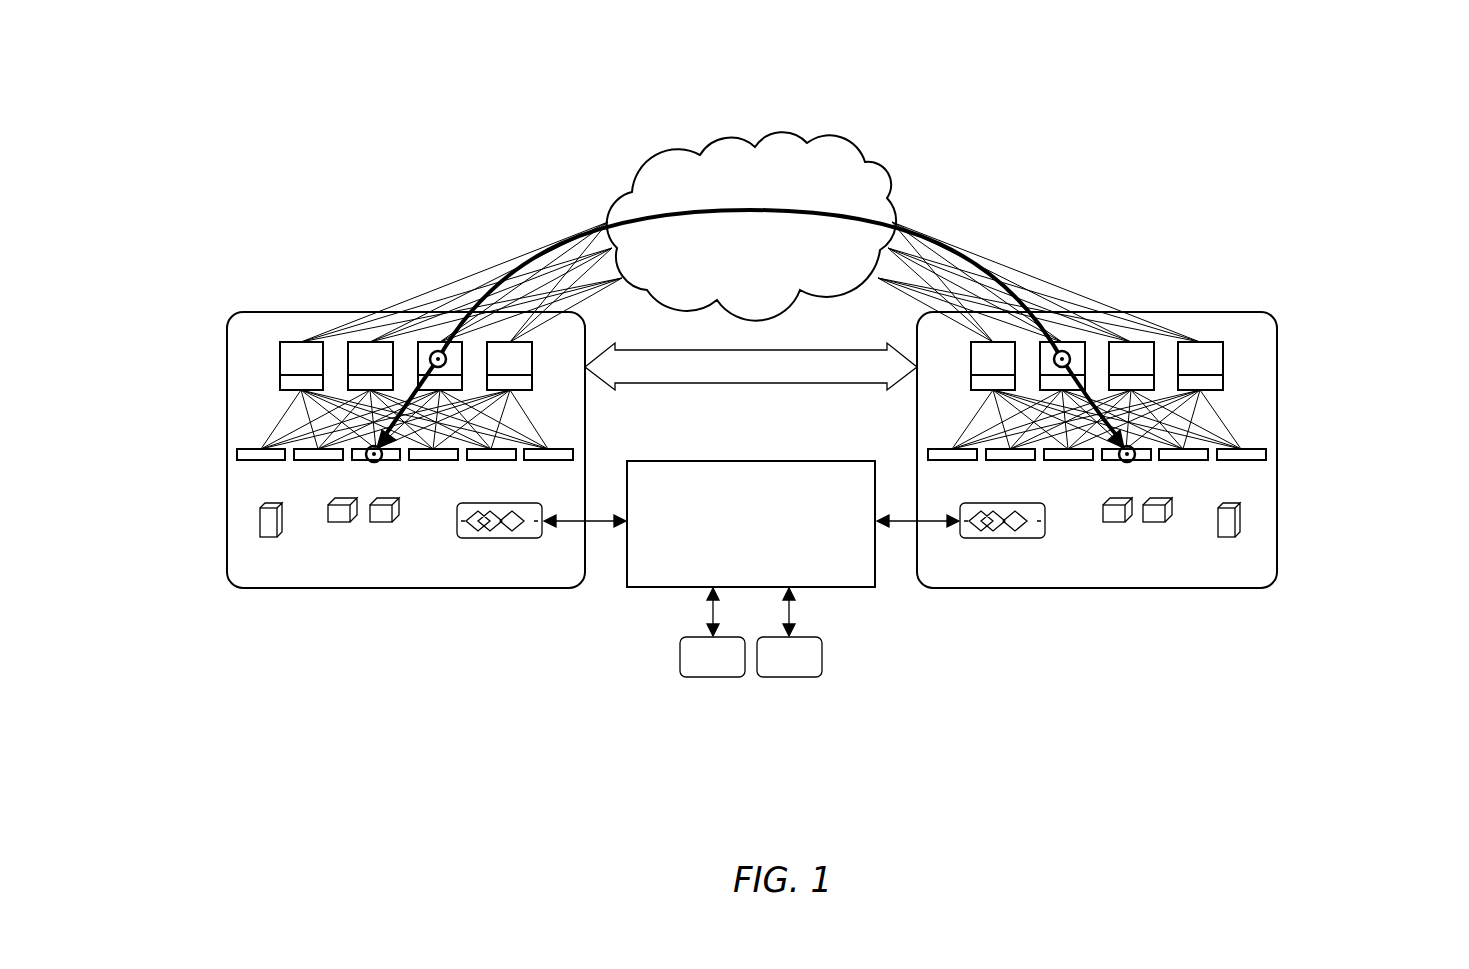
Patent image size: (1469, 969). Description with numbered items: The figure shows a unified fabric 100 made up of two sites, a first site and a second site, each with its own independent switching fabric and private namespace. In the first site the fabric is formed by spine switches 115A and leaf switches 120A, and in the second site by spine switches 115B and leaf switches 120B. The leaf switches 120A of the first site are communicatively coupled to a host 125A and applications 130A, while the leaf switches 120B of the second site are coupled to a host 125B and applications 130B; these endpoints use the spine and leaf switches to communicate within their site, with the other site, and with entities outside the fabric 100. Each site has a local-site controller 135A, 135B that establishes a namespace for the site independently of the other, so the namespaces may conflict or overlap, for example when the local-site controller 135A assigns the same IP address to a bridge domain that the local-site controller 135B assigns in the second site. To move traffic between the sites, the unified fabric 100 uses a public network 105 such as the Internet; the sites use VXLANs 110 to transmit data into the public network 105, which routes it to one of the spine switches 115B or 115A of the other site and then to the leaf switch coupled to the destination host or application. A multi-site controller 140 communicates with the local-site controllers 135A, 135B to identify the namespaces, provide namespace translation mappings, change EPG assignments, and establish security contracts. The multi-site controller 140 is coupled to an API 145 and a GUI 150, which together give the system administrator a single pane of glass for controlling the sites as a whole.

The unified fabric 100 is at (385, 124).
The public network 105 is at (786, 240).
The VXLANs 110 is at (1028, 251).
The spine switches 115A is at (217, 407).
The spine switches 115B is at (1280, 407).
The leaf switches 120A is at (215, 477).
The leaf switches 120B is at (1280, 478).
The host 125A is at (257, 512).
The host 125B is at (1241, 523).
The applications 130A is at (378, 522).
The applications 130B is at (1120, 522).
The local-site controller 135A is at (498, 538).
The local-site controller 135B is at (1003, 538).
The multi-site controller 140 is at (854, 551).
The API 145 is at (693, 698).
The GUI 150 is at (813, 699).